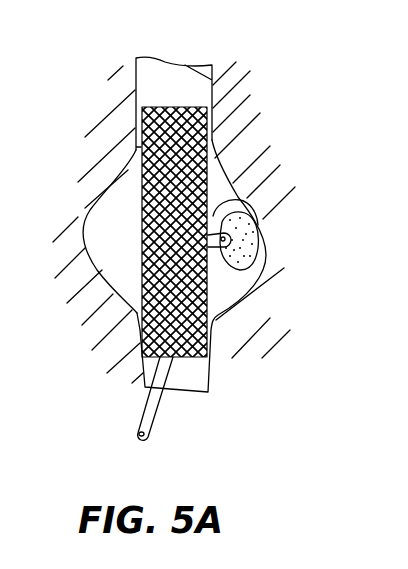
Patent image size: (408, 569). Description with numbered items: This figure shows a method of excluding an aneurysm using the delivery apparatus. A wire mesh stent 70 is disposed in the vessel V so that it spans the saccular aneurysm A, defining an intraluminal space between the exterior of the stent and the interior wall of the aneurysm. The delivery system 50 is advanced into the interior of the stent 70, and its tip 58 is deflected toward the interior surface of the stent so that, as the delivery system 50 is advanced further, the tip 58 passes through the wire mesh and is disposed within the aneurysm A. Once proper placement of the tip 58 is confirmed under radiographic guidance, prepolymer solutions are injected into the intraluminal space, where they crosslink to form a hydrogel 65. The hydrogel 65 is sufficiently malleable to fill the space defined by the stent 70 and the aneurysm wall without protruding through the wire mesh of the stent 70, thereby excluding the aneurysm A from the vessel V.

The delivery system 50 is at (143, 413).
The tip 58 is at (243, 198).
The hydrogel 65 is at (258, 256).
The wire mesh stent 70 is at (195, 138).
The vessel V is at (187, 65).
The saccular aneurysm A is at (112, 230).